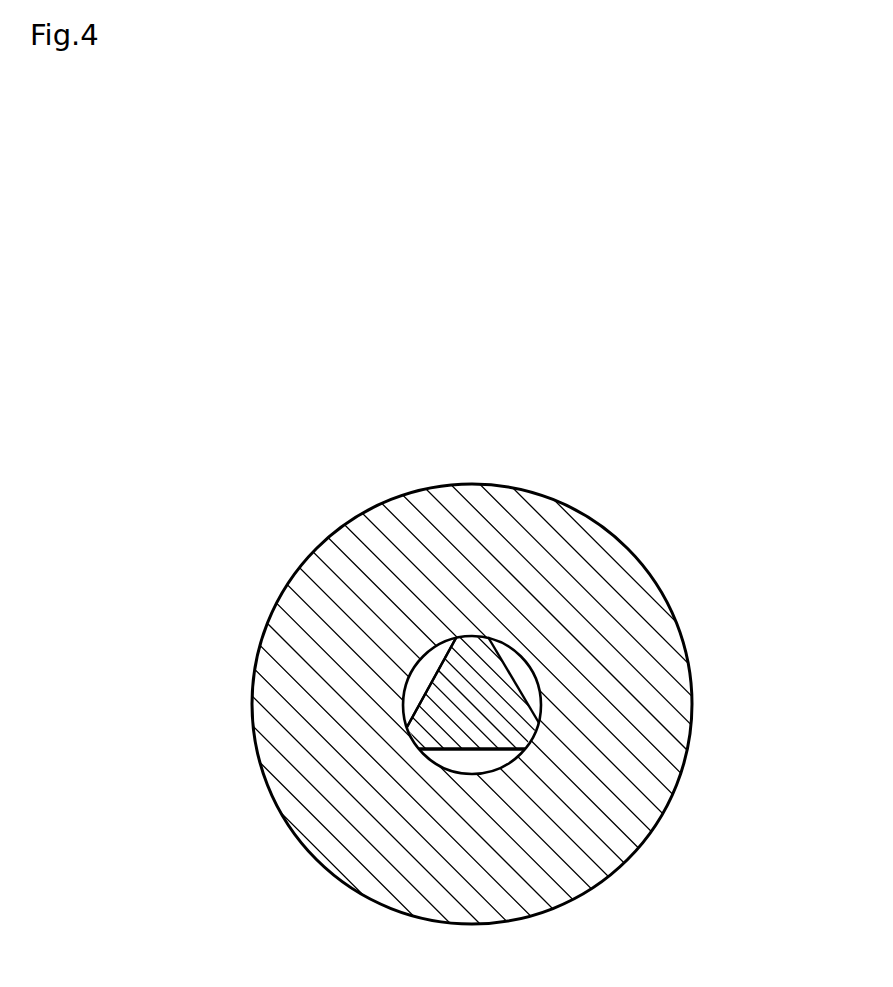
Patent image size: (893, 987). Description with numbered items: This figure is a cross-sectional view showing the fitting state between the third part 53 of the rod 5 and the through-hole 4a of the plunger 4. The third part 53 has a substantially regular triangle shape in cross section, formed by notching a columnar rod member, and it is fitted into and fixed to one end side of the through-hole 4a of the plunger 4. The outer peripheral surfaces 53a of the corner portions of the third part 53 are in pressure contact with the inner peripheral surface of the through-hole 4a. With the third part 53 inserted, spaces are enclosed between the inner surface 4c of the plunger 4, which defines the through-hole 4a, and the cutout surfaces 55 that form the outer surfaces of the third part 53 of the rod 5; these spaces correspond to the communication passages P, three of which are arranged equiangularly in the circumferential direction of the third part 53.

The plunger 4 is at (590, 553).
The through-hole 4a is at (594, 686).
The inner surface 4c is at (538, 682).
The third part 53 is at (431, 595).
The rod 5 is at (509, 655).
The outer peripheral surfaces 53a is at (422, 741).
The cutout surfaces 55 is at (474, 752).
The communication passages P is at (422, 673).